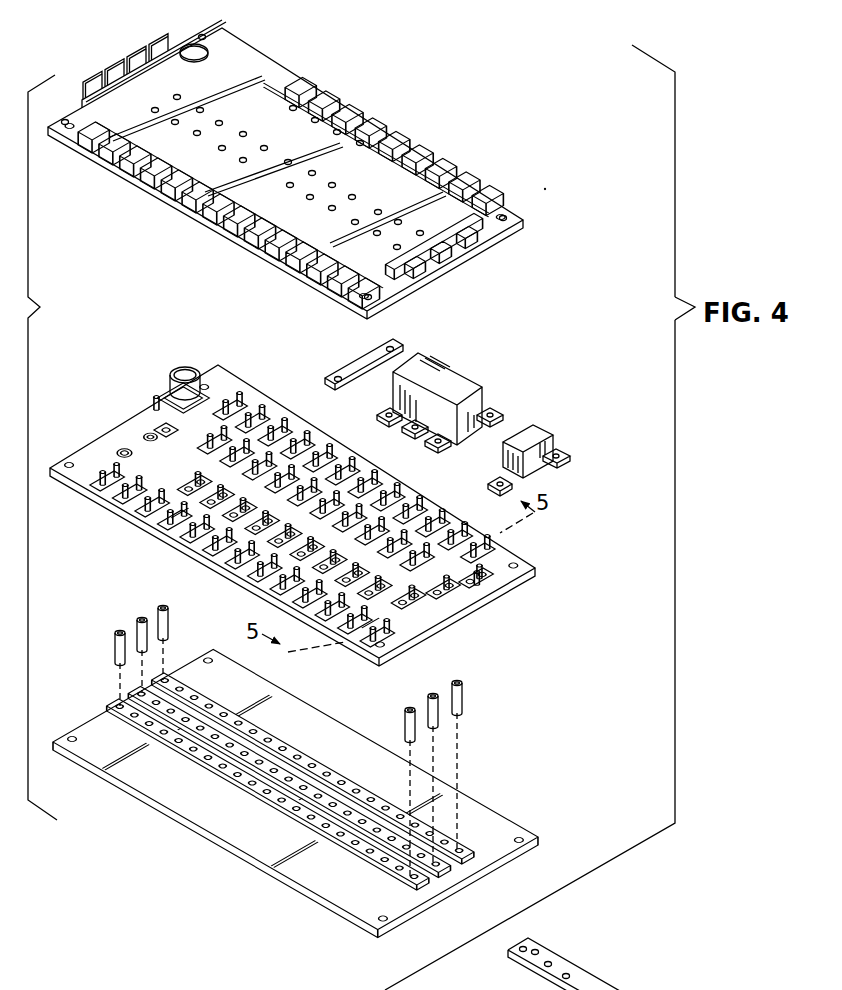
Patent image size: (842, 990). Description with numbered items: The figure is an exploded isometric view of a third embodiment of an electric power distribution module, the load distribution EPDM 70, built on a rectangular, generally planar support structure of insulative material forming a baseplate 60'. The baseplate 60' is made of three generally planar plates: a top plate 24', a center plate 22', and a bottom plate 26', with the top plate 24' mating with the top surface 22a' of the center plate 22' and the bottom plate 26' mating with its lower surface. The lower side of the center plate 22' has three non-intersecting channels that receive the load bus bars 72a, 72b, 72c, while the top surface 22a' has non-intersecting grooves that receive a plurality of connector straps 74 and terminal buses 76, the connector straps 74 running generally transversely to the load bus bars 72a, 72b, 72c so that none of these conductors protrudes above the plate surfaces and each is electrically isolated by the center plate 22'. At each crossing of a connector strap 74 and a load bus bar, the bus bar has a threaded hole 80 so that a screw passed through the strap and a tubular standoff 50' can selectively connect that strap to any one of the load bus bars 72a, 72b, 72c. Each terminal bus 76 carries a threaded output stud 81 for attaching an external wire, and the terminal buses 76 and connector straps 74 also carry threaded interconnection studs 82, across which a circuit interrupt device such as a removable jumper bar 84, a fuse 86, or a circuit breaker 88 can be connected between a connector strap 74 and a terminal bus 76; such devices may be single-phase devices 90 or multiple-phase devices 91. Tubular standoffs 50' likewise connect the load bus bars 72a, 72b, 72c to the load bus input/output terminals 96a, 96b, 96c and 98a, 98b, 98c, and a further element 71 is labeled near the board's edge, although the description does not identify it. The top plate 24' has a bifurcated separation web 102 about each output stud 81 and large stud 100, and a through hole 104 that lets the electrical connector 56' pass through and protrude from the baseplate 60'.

The top plate 24' is at (290, 161).
The bifurcated separation web 102 is at (229, 215).
The through hole 104 is at (206, 47).
The load distribution EPDM 70 is at (545, 189).
The baseplate 60' is at (351, 517).
The center plate 22' is at (336, 503).
The top surface of center plate 22a' is at (275, 568).
The electrical connector 56' is at (208, 362).
The large stud 100 is at (316, 491).
The load bus input/output terminal 96a is at (166, 430).
The load bus input/output terminal 96b is at (150, 437).
The load bus input/output terminal 96c is at (124, 453).
The removable jumper bar 84 is at (398, 347).
The circuit breaker 88 is at (459, 386).
The multiple-phase device 91 is at (494, 407).
The fuse 86 is at (557, 430).
The single-phase device 90 is at (568, 449).
The threaded interconnection stud 82 is at (467, 542).
The contact pads 71 is at (332, 464).
The connector strap 74 is at (317, 498).
The terminal bus 76 is at (283, 535).
The threaded output stud 81 is at (243, 554).
The load bus input/output terminal 98a is at (474, 575).
The load bus input/output terminal 98b is at (441, 586).
The load bus input/output terminal 98c is at (406, 596).
The tubular standoff 50' is at (324, 717).
The bottom plate 26' is at (302, 809).
The load bus bar 72a is at (312, 768).
The load bus bar 72b is at (289, 782).
The load bus bar 72c is at (267, 794).
The threaded hole 80 is at (240, 764).